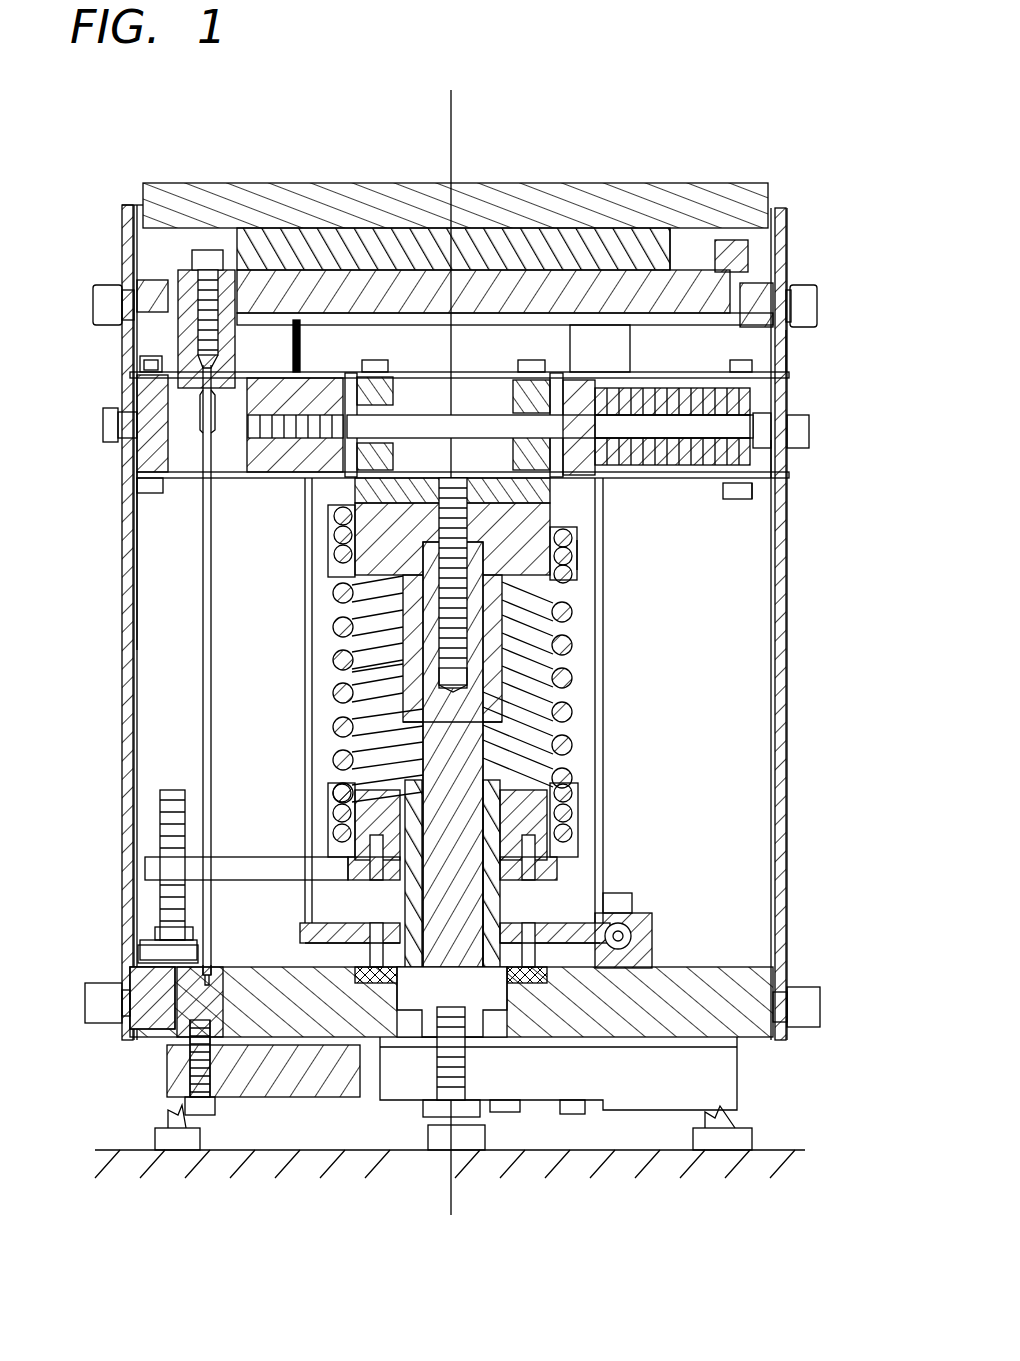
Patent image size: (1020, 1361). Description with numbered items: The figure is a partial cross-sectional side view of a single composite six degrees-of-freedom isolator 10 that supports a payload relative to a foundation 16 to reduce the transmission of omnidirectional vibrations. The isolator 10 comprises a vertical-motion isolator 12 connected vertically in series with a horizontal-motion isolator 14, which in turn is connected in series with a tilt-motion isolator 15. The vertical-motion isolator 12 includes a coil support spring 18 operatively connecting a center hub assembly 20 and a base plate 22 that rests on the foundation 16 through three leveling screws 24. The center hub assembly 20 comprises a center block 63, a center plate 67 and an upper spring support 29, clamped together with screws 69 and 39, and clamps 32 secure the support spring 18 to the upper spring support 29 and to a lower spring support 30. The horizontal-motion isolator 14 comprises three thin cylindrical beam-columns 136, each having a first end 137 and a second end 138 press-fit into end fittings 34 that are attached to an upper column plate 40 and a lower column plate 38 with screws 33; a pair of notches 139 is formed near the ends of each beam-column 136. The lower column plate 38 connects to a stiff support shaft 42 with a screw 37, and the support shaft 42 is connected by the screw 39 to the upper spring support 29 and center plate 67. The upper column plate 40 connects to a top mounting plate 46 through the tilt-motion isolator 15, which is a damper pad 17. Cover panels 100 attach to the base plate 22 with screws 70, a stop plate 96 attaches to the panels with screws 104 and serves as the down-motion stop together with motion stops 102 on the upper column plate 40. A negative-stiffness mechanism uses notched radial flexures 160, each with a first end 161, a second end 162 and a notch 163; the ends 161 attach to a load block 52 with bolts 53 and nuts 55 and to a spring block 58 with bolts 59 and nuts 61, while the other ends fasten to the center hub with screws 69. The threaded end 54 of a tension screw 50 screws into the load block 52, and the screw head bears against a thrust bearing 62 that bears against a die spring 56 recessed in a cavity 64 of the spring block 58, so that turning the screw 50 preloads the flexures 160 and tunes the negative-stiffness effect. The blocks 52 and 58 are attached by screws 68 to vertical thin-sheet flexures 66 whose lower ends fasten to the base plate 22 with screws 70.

The isolator 10 is at (103, 226).
The vertical-motion isolator 12 is at (280, 715).
The horizontal-motion isolator 14 is at (168, 610).
The tilt-motion isolator 15 is at (668, 238).
The foundation 16 is at (790, 1150).
The damper pad 17 is at (515, 230).
The support spring 18 is at (560, 712).
The center hub assembly 20 is at (328, 500).
The base plate 22 is at (752, 965).
The leveling screws 24 is at (160, 1140).
The upper spring support 29 is at (340, 615).
The lower spring support 30 is at (540, 795).
The clamps 32 is at (330, 540).
The screws 33 is at (190, 328).
The end fittings 34 is at (195, 363).
The screw 37 is at (428, 1108).
The lower column plate 38 is at (240, 1097).
The screw 39 is at (345, 672).
The upper column plate 40 is at (190, 270).
The support shaft 42 is at (470, 665).
The top mounting plate 46 is at (620, 190).
The tension screw 50 is at (795, 458).
The load block 52 is at (140, 456).
The bolts 53 is at (140, 365).
The threaded end 54 is at (268, 478).
The nuts 55 is at (140, 528).
The die spring 56 is at (686, 474).
The spring block 58 is at (598, 440).
The bolts 59 is at (786, 355).
The nuts 61 is at (742, 502).
The thrust bearing 62 is at (750, 402).
The center block 63 is at (393, 390).
The cavity 64 is at (628, 478).
The vertical thin-sheet flexures 66 is at (135, 700).
The center plate 67 is at (580, 560).
The screws 68 is at (140, 438).
The screws 69 is at (375, 360).
The screws 70 is at (95, 1012).
The stop plate 96 is at (775, 300).
The cover panels 100 is at (122, 648).
The motion stops 102 is at (755, 246).
The screws 104 is at (95, 300).
The beam-columns 136 is at (205, 755).
The first end 137 is at (213, 362).
The second end 138 is at (214, 975).
The notches 139 is at (104, 420).
The radial flexures 160 is at (300, 372).
The first end 161 is at (395, 375).
The second end 162 is at (140, 382).
The notch 163 is at (340, 372).